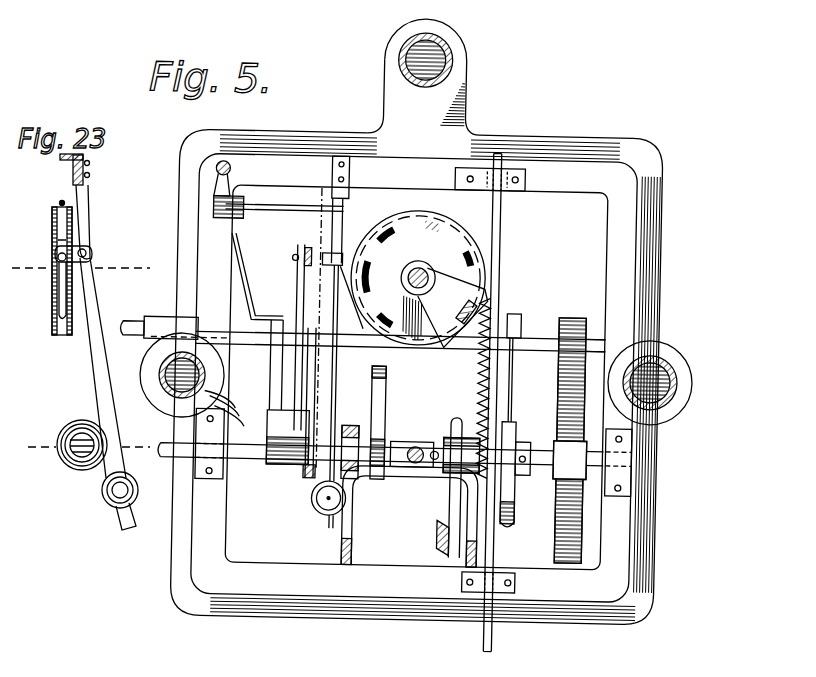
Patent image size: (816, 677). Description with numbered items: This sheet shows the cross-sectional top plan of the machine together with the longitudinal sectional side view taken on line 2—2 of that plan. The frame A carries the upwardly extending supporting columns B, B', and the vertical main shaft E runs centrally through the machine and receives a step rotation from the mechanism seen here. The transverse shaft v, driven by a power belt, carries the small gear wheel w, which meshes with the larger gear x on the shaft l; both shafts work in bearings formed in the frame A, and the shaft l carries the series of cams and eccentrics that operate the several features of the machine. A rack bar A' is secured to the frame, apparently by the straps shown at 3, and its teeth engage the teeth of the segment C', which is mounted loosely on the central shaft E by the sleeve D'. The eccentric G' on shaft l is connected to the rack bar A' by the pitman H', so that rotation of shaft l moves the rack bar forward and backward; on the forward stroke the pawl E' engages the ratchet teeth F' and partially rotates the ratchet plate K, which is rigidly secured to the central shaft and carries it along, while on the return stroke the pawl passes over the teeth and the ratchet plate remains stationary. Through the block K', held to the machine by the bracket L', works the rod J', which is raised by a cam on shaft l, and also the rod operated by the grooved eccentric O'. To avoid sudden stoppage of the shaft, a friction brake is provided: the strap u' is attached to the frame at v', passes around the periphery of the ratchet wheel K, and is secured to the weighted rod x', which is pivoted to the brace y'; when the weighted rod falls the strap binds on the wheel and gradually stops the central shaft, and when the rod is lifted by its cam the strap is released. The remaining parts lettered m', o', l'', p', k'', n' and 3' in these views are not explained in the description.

In FIG. 5, the frame A is at (435, 320).
In FIG. 5, the rack bar A' is at (493, 403).
In FIG. 5, the supporting column B is at (190, 379).
In FIG. 5, the supporting column B' is at (453, 60).
In FIG. 5, the transverse shaft v is at (363, 324).
In FIG. 5, the strap attachment point v' is at (278, 201).
In FIG. 5, the pivot pin m' is at (192, 179).
In FIG. 5, the section line 2— 2 is at (328, 341).
In FIG. 5, the rod guide clamp 3 is at (503, 403).
In FIG. 23, the brace y' is at (85, 206).
In FIG. 5, the brace y' is at (341, 340).
In FIG. 5, the bracket L' is at (323, 521).
In FIG. 23, the strap u' is at (35, 331).
In FIG. 5, the strap u' is at (351, 297).
In FIG. 5, the center line pivot o' is at (289, 327).
In FIG. 5, the bell crank lever l'' is at (256, 321).
In FIG. 5, the vertical rod p' is at (291, 324).
In FIG. 5, the sliding block k'' is at (285, 456).
In FIG. 5, the pawl rod n' is at (303, 413).
In FIG. 23, the guide block 3' is at (79, 487).
In FIG. 5, the guide block 3' is at (346, 440).
In FIG. 5, the eccentric O' is at (393, 423).
In FIG. 5, the vertical main shaft E is at (418, 278).
In FIG. 5, the sleeve D' is at (399, 309).
In FIG. 23, the ratchet plate K is at (79, 268).
In FIG. 5, the ratchet plate K is at (418, 261).
In FIG. 5, the ratchet teeth F' is at (452, 217).
In FIG. 5, the segment C' is at (453, 308).
In FIG. 5, the pawl E' is at (502, 380).
In FIG. 23, the shaft l is at (89, 463).
In FIG. 5, the shaft l is at (394, 456).
In FIG. 5, the block K' is at (410, 481).
In FIG. 5, the rod J' is at (423, 436).
In FIG. 5, the pitman H' is at (519, 433).
In FIG. 5, the eccentric G' is at (518, 512).
In FIG. 5, the small gear wheel w is at (568, 318).
In FIG. 5, the gear x is at (542, 408).
In FIG. 23, the weighted rod x' is at (98, 394).
In FIG. 5, the weighted rod x' is at (352, 370).